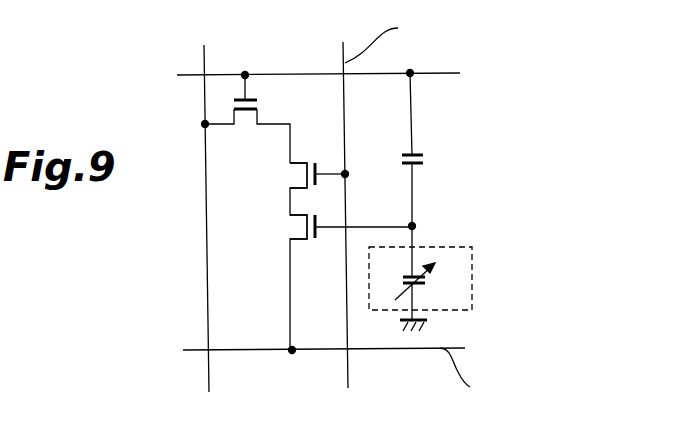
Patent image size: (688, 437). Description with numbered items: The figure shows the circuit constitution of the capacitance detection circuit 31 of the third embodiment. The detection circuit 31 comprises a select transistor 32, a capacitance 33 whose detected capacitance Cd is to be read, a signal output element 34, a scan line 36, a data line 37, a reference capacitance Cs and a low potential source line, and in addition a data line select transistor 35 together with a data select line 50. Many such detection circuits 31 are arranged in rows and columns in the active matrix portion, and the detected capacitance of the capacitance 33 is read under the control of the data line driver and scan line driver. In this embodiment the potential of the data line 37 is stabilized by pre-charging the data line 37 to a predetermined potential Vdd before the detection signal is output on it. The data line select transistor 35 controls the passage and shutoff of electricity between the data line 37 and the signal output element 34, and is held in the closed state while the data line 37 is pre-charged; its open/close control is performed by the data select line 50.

The capacitance detection circuit 31 is at (535, 78).
The select transistor 32 is at (245, 118).
The capacitance 33 is at (472, 285).
The signal output element 34 is at (295, 227).
The data line select transistor 35 is at (294, 175).
The scan line 36 is at (323, 72).
The data line 37 is at (204, 62).
The data select line 50 is at (384, 40).